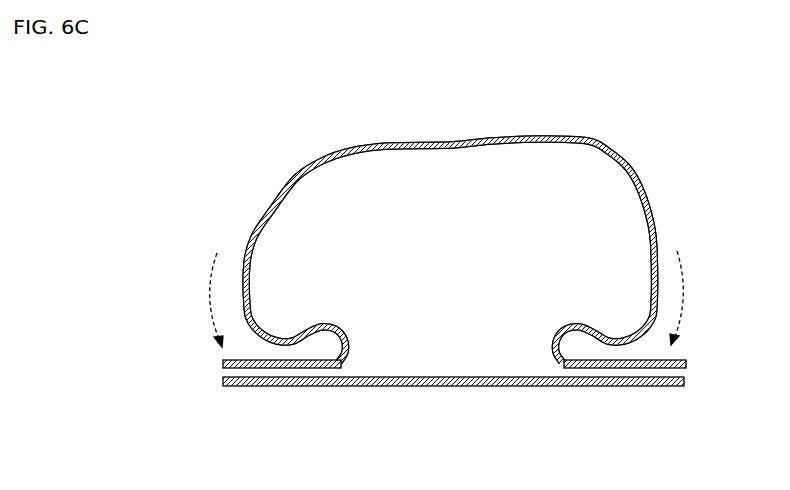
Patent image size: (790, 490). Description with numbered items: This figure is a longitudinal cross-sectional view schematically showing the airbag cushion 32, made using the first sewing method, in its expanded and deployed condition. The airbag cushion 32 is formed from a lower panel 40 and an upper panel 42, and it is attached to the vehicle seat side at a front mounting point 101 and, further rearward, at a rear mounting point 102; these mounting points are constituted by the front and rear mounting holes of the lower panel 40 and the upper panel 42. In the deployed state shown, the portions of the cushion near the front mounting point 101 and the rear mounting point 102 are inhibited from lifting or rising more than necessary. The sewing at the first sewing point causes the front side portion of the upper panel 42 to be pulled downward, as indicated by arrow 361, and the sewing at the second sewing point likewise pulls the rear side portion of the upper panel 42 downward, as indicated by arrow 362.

The airbag cushion 32 is at (492, 133).
The upper panel 42 is at (441, 142).
The arrow 361 is at (207, 290).
The arrow 362 is at (685, 291).
The lower panel 40 is at (453, 386).
The front mounting point 101 is at (264, 388).
The rear mounting point 102 is at (652, 388).